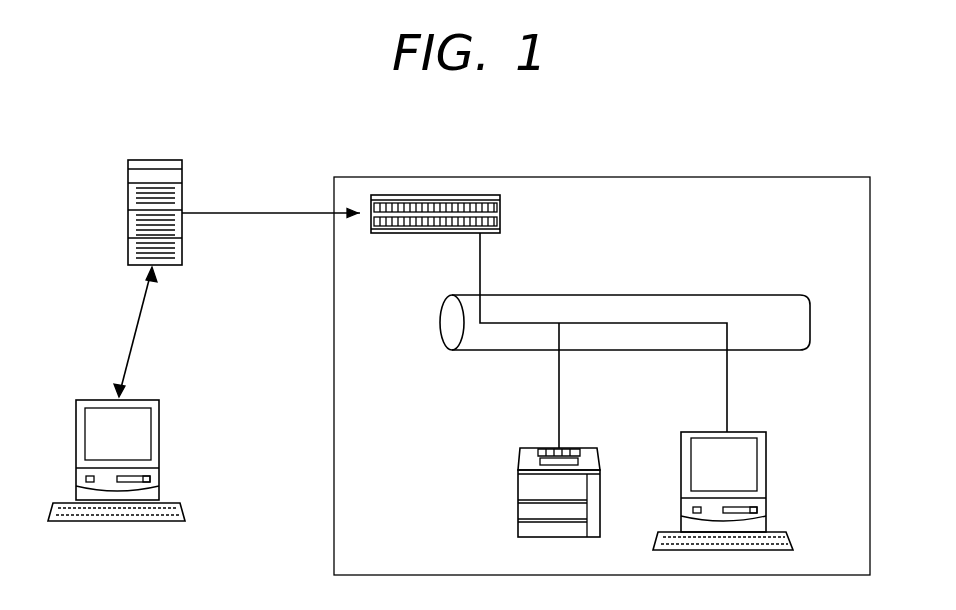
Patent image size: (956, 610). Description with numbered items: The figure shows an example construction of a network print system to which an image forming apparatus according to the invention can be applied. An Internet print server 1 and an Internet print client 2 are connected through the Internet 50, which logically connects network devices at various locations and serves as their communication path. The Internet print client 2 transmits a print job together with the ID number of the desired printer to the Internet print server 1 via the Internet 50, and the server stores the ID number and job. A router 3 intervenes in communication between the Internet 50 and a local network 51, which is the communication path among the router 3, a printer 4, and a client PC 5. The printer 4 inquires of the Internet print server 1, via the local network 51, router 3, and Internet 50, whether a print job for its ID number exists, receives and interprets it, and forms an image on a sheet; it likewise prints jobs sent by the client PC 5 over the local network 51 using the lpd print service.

The Internet print server 1 is at (160, 160).
The Internet print client 2 is at (160, 424).
The router 3 is at (500, 213).
The printer 4 is at (518, 487).
The client PC 5 is at (767, 458).
The Internet 50 is at (240, 213).
The local network 51 is at (722, 294).